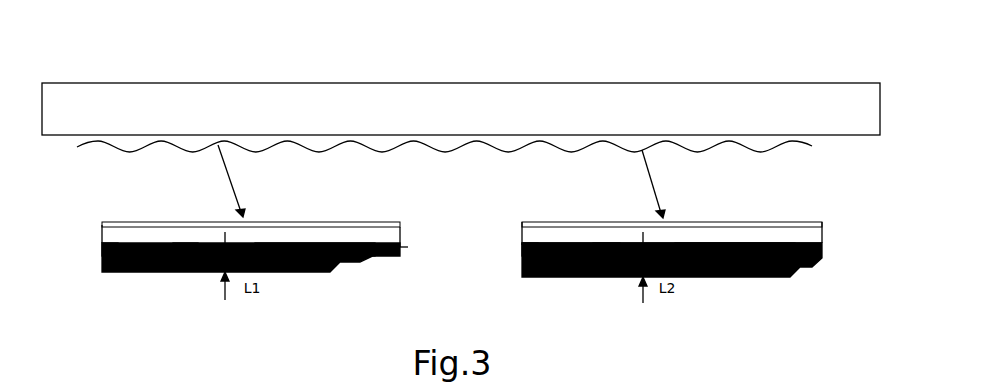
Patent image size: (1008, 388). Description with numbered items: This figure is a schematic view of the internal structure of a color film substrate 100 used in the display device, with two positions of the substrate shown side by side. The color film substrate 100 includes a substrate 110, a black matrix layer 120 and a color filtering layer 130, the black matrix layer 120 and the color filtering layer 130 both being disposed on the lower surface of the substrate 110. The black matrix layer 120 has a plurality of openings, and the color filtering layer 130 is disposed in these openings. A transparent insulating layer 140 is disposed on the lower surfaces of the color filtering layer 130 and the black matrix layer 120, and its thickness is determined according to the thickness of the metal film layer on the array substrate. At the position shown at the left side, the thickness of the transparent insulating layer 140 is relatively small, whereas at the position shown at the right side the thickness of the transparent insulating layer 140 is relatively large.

The color film substrate 100 is at (473, 80).
The substrate 110 is at (543, 233).
The black matrix layer 120 is at (522, 244).
The color filtering layer 130 is at (347, 263).
The transparent insulating layer 140 is at (333, 272).